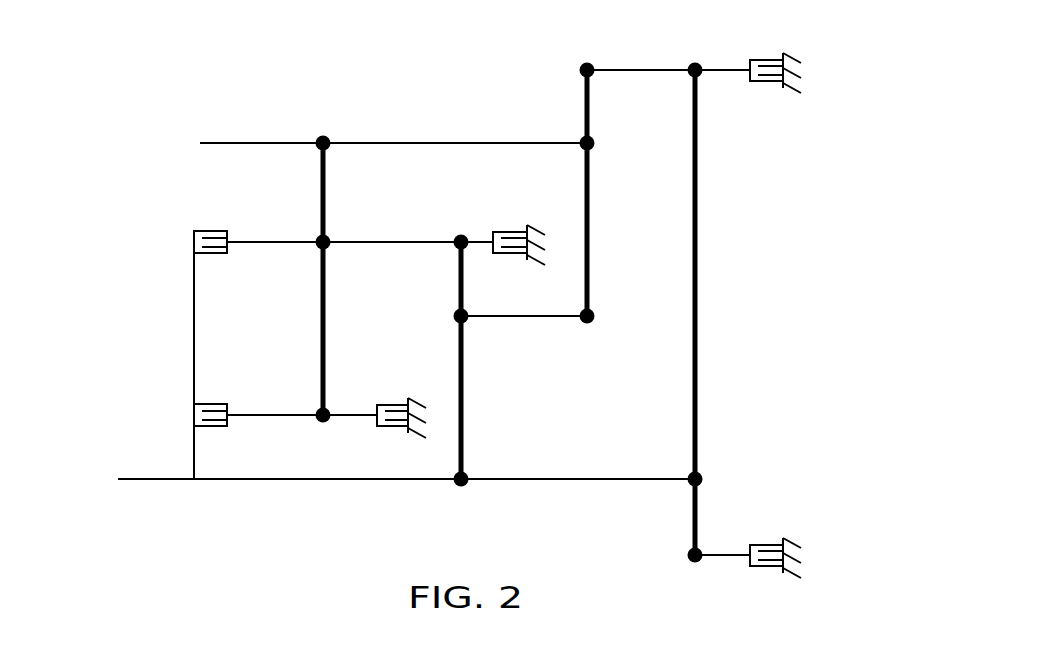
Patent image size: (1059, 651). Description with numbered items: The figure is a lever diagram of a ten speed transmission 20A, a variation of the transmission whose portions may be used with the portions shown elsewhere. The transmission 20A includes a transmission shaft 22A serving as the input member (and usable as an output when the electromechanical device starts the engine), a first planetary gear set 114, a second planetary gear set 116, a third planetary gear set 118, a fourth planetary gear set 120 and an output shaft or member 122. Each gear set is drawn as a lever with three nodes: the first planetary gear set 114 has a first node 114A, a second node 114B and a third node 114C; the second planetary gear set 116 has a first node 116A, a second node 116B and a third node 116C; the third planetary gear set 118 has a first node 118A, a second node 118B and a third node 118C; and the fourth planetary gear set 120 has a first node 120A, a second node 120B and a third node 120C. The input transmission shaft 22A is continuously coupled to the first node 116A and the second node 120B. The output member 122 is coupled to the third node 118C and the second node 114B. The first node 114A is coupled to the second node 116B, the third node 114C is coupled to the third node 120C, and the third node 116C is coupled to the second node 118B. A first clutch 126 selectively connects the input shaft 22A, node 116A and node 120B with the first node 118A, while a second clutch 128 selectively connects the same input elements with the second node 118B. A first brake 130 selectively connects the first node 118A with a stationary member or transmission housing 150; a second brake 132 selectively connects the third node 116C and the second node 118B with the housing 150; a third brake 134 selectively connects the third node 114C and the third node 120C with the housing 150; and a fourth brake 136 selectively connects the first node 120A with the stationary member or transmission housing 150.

The transmission 20A is at (826, 50).
The transmission shaft 22A is at (133, 481).
The output shaft or member 122 is at (248, 145).
The first planetary gear set 114 is at (549, 93).
The first node 114A is at (585, 324).
The second node 114B is at (594, 142).
The third node 114C is at (590, 64).
The second planetary gear set 116 is at (474, 224).
The first node 116A is at (459, 488).
The second node 116B is at (453, 315).
The third node 116C is at (457, 238).
The third planetary gear set 118 is at (297, 113).
The first node 118A is at (321, 428).
The second node 118B is at (328, 237).
The third node 118C is at (324, 136).
The fourth planetary gear set 120 is at (714, 66).
The first node 120A is at (687, 554).
The second node 120B is at (703, 478).
The third node 120C is at (692, 64).
The first clutch 126 is at (216, 403).
The second clutch 128 is at (213, 230).
The first brake 130 is at (392, 404).
The second brake 132 is at (507, 254).
The third brake 134 is at (762, 82).
The fourth brake 136 is at (765, 567).
The stationary member or transmission housing 150 is at (531, 226).